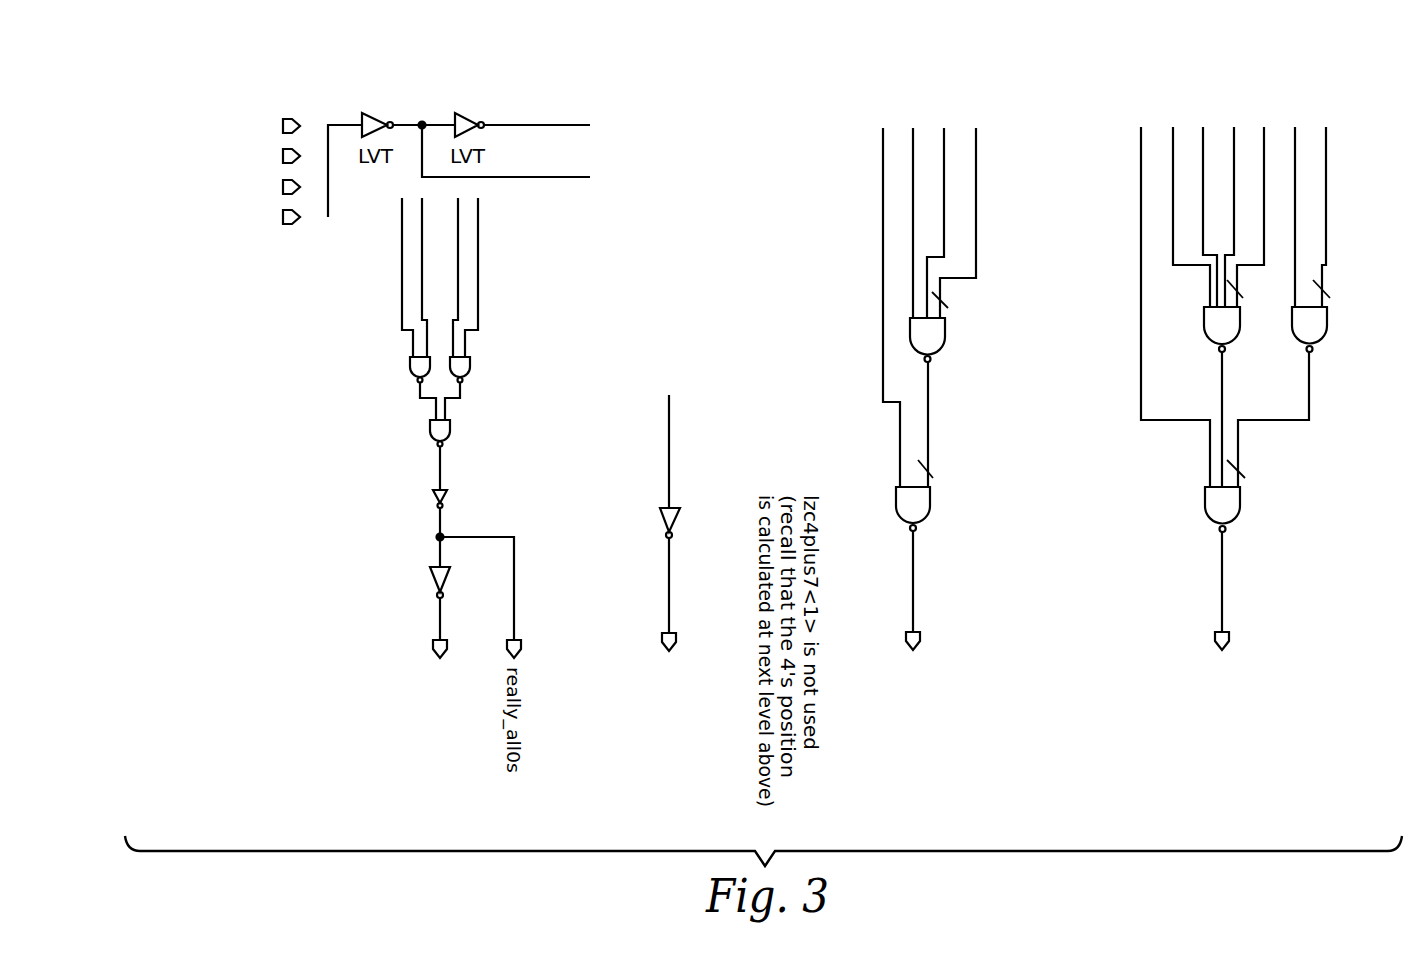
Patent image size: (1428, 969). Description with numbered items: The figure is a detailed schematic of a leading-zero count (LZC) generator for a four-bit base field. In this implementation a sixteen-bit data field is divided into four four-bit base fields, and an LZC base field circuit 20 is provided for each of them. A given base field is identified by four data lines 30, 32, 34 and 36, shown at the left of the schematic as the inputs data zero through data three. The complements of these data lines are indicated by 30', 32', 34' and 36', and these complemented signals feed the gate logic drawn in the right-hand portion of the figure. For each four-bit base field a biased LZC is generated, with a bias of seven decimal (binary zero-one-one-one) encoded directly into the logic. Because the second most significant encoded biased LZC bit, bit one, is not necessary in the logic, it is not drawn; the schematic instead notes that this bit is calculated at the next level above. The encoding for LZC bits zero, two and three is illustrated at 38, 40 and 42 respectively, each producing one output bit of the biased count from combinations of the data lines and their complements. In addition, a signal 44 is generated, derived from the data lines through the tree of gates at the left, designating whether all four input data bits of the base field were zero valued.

The LZC base field circuit 20 is at (1350, 103).
The data line 30 is at (398, 307).
The data line 32 is at (277, 246).
The data line 34 is at (330, 262).
The data line 36 is at (330, 276).
The complement of data line 30' is at (1013, 307).
The complement of data line 32' is at (1158, 200).
The complement of data line 34' is at (1164, 200).
The complement of data line 36' is at (1280, 194).
The encoding for LZC bit 0 38 is at (713, 501).
The encoding for LZC bit 2 40 is at (951, 488).
The encoding for LZC bit 3 42 is at (1263, 498).
The additional signal 44 is at (434, 652).